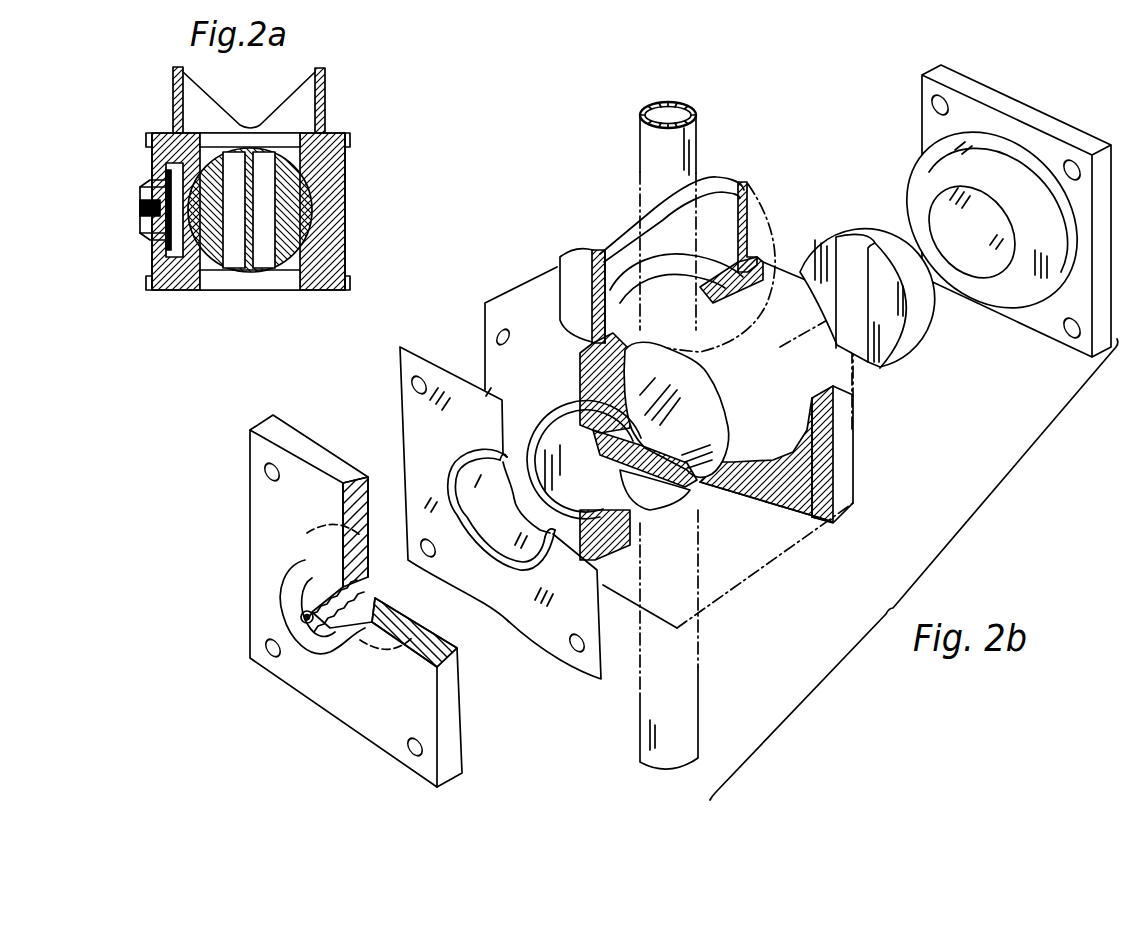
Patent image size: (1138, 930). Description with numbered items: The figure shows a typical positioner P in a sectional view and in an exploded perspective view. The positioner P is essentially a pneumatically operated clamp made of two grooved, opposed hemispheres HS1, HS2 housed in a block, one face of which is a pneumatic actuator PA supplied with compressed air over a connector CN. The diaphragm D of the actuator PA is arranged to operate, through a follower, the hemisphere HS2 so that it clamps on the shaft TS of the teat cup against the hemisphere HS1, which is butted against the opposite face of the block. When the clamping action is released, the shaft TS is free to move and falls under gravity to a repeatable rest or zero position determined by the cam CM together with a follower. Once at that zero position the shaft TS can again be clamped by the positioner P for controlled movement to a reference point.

In FIG. 2A, the cam CM is at (327, 97).
In FIG. 2B, the cam CM is at (737, 184).
In FIG. 2A, the connector CN is at (140, 208).
In FIG. 2B, the connector CN is at (303, 630).
In FIG. 2A, the hemisphere HS1 is at (258, 254).
In FIG. 2B, the hemisphere HS1 is at (925, 333).
In FIG. 2A, the hemisphere HS2 is at (226, 240).
In FIG. 2B, the hemisphere HS2 is at (727, 467).
In FIG. 2B, the diaphragm D is at (523, 620).
In FIG. 2B, the pneumatic actuator PA is at (455, 792).
In FIG. 2B, the shaft TS is at (697, 744).
In FIG. 2B, the positioner P is at (884, 468).